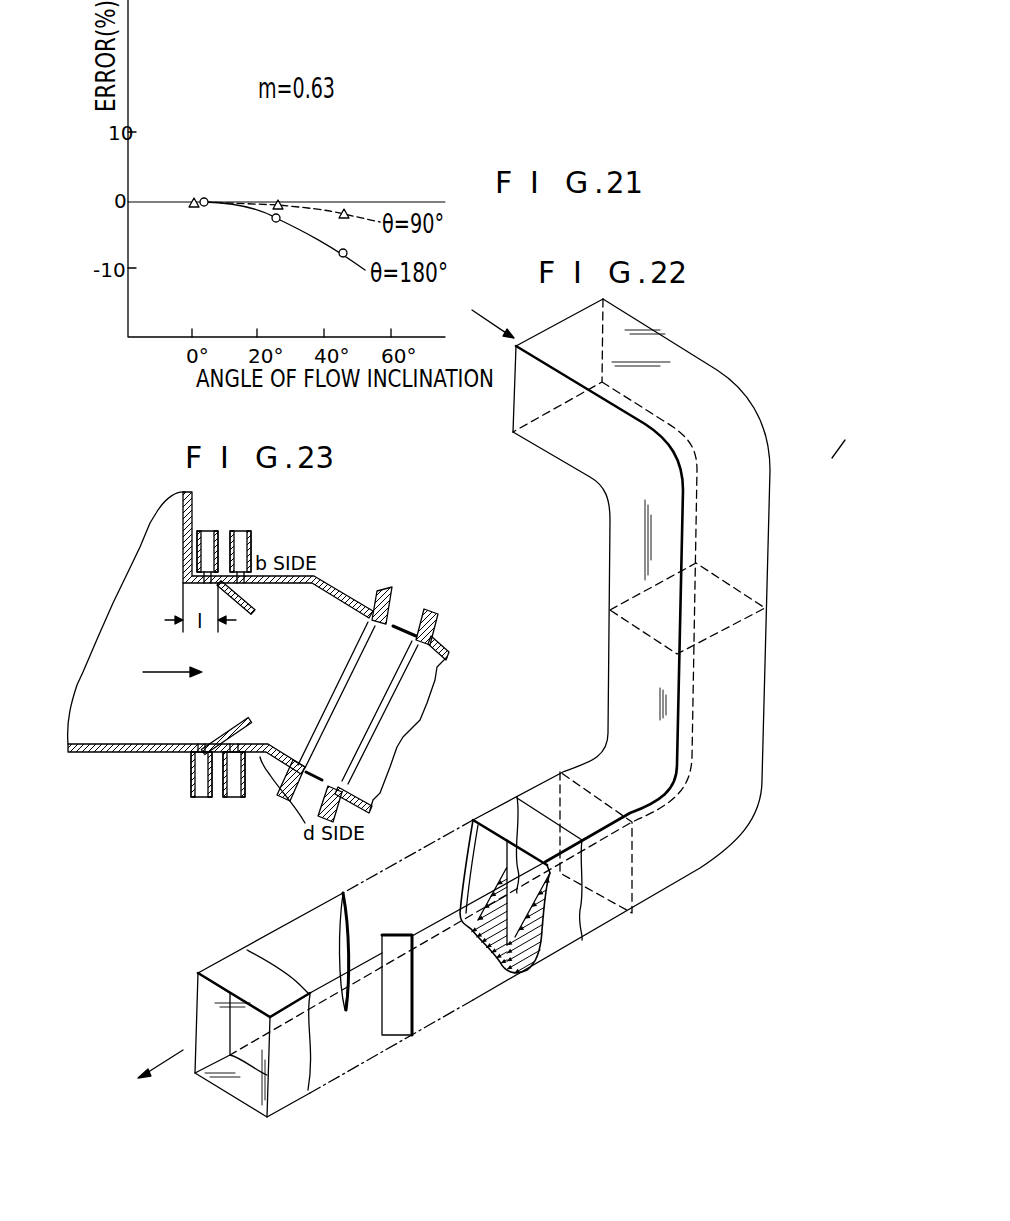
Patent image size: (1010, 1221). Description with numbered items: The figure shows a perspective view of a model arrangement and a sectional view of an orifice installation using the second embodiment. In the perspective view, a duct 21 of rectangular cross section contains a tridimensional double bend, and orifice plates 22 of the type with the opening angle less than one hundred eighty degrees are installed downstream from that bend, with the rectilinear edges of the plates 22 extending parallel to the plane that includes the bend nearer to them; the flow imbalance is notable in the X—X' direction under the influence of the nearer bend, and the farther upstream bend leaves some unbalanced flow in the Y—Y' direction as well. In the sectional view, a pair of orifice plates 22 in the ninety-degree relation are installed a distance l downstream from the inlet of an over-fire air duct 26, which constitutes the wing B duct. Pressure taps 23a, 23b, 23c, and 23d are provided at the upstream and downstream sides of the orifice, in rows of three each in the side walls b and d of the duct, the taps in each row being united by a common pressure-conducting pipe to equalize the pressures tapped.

In FIG. 22, the duct 21 is at (608, 661).
In FIG. 22, the orifice plates 22 is at (340, 930).
In FIG. 23, the orifice plates 22 is at (253, 606).
In FIG. 23, the pressure tap 23a is at (205, 531).
In FIG. 23, the pressure tap 23b is at (243, 531).
In FIG. 23, the pressure tap 23c is at (192, 787).
In FIG. 23, the pressure tap 23d is at (233, 797).
In FIG. 23, the over-fire air duct 26 is at (300, 578).